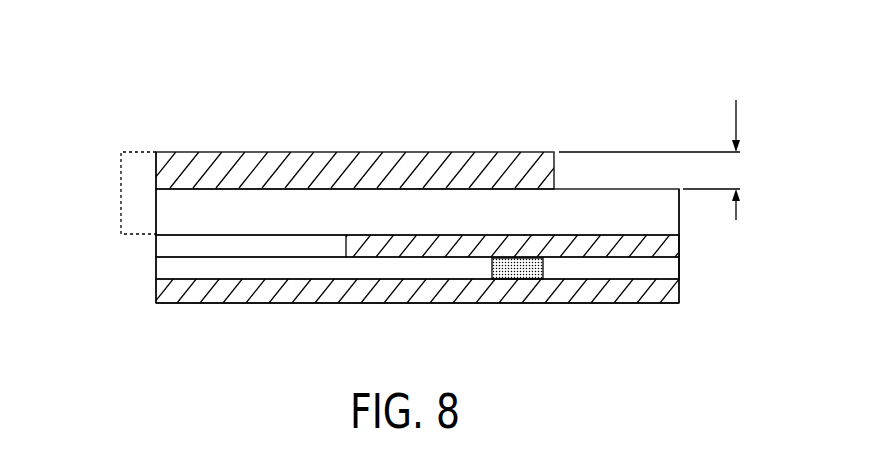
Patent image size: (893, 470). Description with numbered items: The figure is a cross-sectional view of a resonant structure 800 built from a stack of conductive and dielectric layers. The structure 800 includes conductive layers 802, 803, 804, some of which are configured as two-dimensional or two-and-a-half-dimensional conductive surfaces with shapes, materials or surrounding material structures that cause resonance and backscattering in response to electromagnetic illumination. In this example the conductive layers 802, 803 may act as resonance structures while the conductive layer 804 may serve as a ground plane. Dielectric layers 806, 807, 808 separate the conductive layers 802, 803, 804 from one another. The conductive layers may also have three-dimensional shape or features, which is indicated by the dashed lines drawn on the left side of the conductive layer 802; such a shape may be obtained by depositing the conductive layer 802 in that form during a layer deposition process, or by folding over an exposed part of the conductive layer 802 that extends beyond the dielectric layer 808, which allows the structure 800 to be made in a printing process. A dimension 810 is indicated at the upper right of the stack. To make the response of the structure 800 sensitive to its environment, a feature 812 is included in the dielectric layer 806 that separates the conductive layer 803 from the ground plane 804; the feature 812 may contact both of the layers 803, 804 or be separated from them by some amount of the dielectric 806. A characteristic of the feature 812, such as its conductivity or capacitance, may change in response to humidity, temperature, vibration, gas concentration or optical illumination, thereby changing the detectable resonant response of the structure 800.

The resonant structure 800 is at (168, 95).
The conductive layer 802 is at (167, 165).
The conductive layer 803 is at (671, 248).
The conductive layer 804 is at (167, 300).
The dielectric layer 806 is at (168, 275).
The dielectric layer 807 is at (167, 246).
The dielectric layer 808 is at (670, 223).
The thickness dimension 810 is at (733, 128).
The feature 812 is at (523, 267).